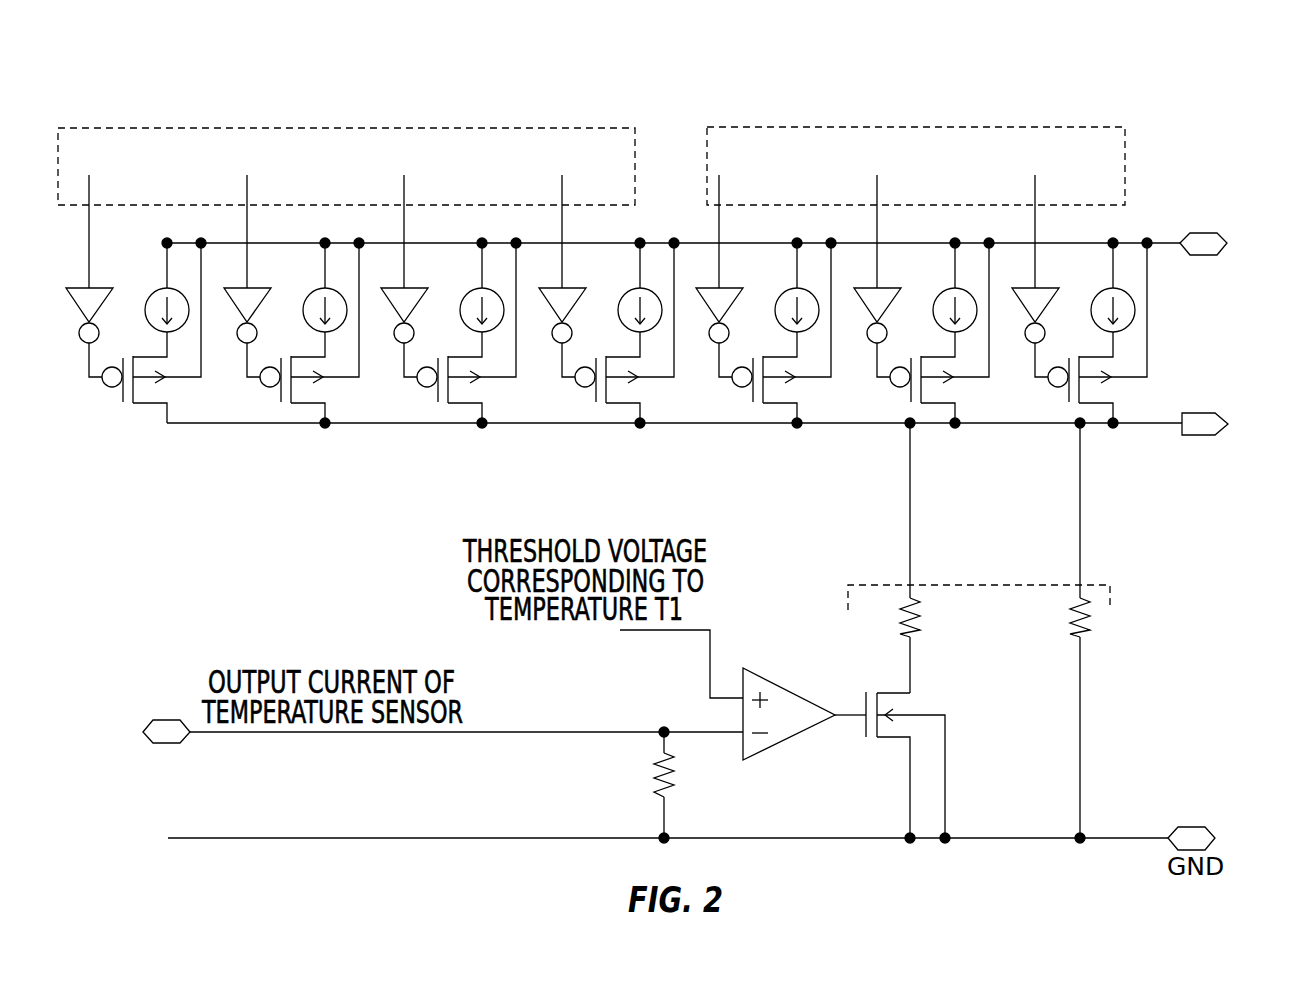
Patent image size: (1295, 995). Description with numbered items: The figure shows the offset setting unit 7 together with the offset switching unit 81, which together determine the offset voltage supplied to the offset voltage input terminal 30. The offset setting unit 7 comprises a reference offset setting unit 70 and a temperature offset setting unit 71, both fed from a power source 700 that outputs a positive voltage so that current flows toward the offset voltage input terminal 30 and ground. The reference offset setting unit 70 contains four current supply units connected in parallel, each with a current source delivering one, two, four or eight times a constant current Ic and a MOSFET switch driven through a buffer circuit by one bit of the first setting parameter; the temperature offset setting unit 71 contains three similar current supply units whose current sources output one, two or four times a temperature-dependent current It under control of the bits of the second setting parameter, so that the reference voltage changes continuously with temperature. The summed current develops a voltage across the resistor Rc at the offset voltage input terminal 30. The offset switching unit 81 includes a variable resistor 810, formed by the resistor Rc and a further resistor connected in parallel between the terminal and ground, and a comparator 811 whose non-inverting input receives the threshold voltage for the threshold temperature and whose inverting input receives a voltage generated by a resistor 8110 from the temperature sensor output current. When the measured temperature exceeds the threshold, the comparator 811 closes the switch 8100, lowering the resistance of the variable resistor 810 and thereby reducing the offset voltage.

The offset setting unit 7 is at (1165, 92).
The reference offset setting unit 70 is at (673, 150).
The temperature offset setting unit 71 is at (1140, 150).
The power source 700 is at (1200, 257).
The offset voltage input terminal 30 is at (1203, 437).
The variable resistor 810 is at (978, 585).
The comparator 811 is at (778, 745).
The switch 8100 is at (885, 740).
The resistor 8110 is at (673, 798).
The offset switching unit 81 is at (1110, 845).